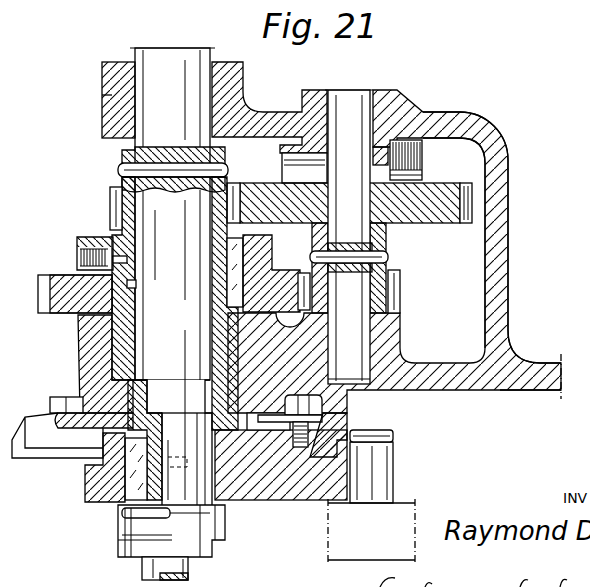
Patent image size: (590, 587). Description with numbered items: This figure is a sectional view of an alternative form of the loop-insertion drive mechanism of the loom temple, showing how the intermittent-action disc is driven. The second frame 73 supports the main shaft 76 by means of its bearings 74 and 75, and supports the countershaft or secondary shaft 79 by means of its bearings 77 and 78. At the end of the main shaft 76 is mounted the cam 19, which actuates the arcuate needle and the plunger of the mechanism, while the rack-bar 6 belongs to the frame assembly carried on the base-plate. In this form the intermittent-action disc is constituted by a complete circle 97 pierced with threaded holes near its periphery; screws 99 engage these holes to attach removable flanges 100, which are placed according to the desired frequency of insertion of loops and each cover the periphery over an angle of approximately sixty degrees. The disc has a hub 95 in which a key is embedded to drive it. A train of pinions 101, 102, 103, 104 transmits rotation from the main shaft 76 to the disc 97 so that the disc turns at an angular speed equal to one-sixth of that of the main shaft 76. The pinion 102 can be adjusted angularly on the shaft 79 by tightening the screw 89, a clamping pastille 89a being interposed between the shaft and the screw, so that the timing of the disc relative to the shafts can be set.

The rack-bar 6 is at (340, 534).
The cam 19 is at (100, 482).
The second frame 73 is at (537, 368).
The bearing 74 is at (88, 343).
The bearing 75 is at (110, 97).
The main shaft 76 is at (176, 50).
The bearing 77 is at (392, 346).
The bearing 78 is at (399, 104).
The countershaft 79 is at (346, 100).
The screw 89 is at (424, 168).
The clamping pastille 89a is at (418, 117).
The hub 95 is at (118, 368).
The complete circle 97 is at (330, 422).
The screw 99 is at (312, 402).
The removable flange 100 is at (366, 429).
The pinion 101 is at (110, 203).
The pinion 102 is at (452, 201).
The pinion 103 is at (401, 291).
The pinion 104 is at (62, 283).